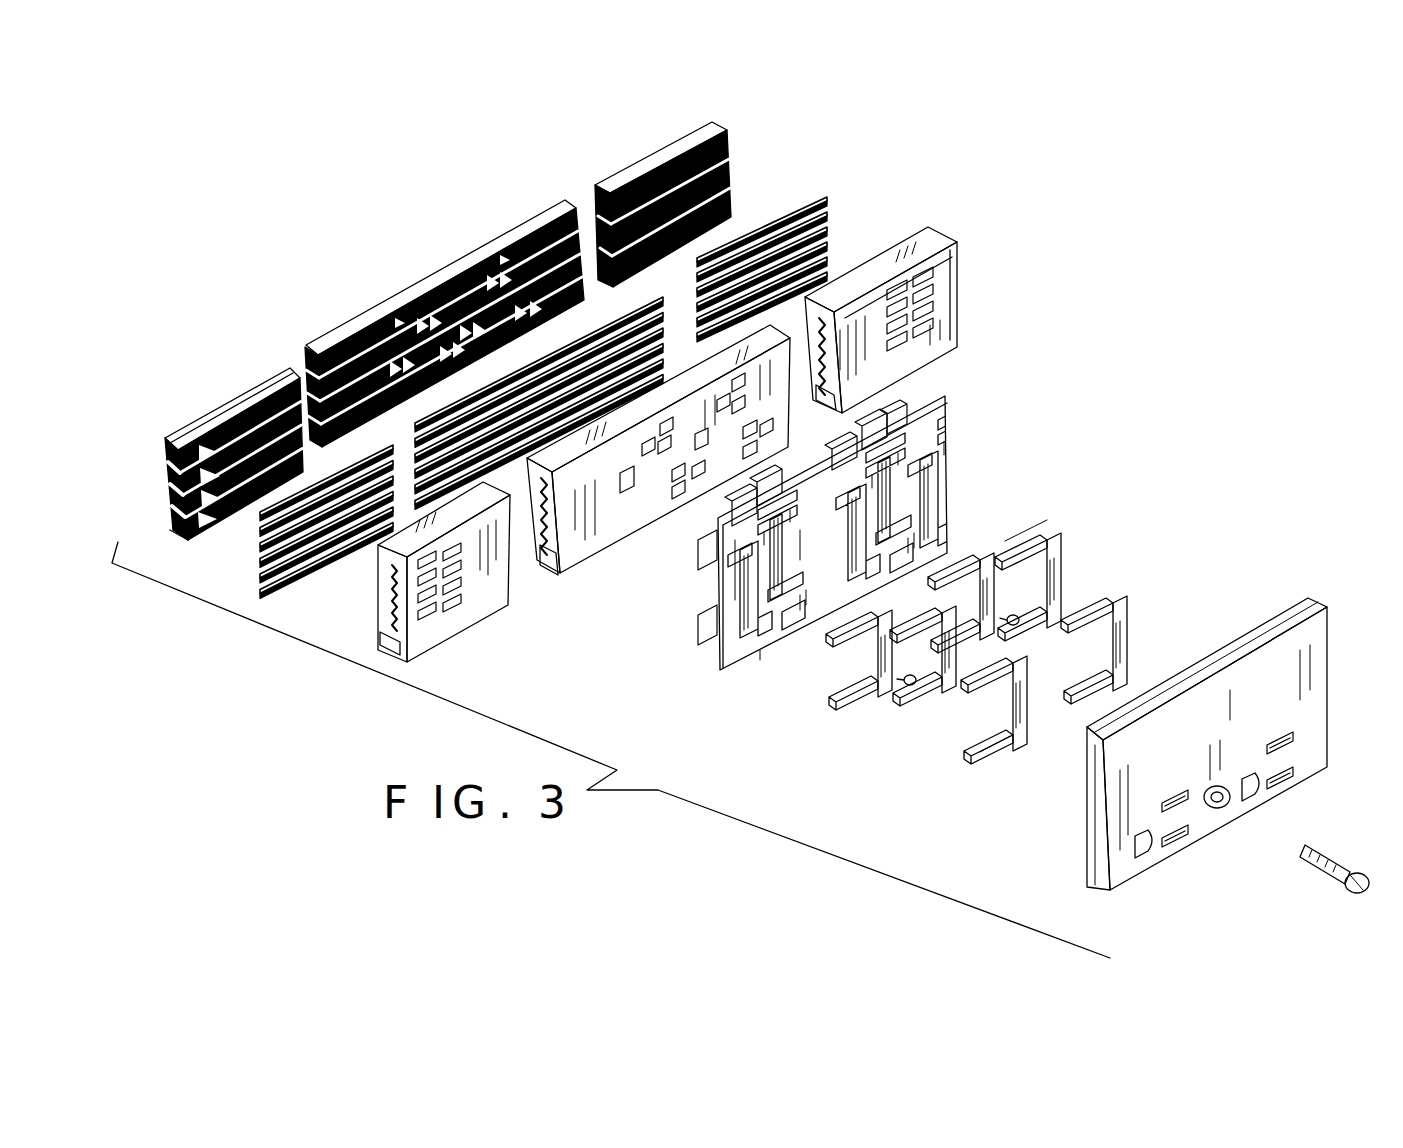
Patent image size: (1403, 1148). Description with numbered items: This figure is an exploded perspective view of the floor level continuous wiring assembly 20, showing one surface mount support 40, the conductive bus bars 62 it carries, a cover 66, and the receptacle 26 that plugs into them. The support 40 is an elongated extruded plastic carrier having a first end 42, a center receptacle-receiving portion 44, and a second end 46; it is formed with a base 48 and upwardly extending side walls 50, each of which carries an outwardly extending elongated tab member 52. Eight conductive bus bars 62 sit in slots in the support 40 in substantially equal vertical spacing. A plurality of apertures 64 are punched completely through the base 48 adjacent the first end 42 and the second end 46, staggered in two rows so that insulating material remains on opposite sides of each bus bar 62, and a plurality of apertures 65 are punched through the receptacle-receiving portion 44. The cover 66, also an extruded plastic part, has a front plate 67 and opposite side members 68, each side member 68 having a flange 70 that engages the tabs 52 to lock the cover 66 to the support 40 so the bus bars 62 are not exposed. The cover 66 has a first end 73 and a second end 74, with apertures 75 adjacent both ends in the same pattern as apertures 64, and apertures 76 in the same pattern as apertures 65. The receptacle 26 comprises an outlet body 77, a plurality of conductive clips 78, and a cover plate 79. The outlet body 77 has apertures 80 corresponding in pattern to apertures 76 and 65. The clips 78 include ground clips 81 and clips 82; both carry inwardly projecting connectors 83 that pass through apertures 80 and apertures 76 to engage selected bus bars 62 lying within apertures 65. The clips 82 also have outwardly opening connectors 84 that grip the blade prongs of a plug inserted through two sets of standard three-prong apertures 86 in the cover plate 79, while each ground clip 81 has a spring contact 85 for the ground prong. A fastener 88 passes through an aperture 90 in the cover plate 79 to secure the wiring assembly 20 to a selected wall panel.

The floor level wiring assembly 20 is at (1200, 237).
The receptacle 26 is at (1262, 458).
The support 40 is at (515, 169).
The first end 42 is at (158, 443).
The center receptacle-receiving portion 44 is at (448, 250).
The second end 46 is at (743, 154).
The base 48 is at (173, 484).
The side walls 50 is at (222, 394).
The tab member 52 is at (272, 385).
The conductive bus bar 62 is at (840, 209).
The apertures 64 is at (202, 443).
The apertures 65 is at (502, 262).
The cover 66 is at (988, 278).
The front plate 67 is at (950, 330).
The side members 68 is at (905, 235).
The flange 70 is at (811, 320).
The first end 73 is at (392, 656).
The second end 74 is at (960, 305).
The apertures 75 is at (938, 284).
The apertures 76 is at (739, 371).
The outlet body 77 is at (953, 430).
The conductive clips 78 is at (1116, 544).
The cover plate 79 is at (1308, 660).
The apertures 80 is at (905, 448).
The ground clips 81 is at (989, 580).
The clips 82 is at (1052, 576).
The inwardly projecting connectors 83 is at (1045, 528).
The outwardly opening connectors 84 is at (971, 685).
The spring contact 85 is at (1014, 614).
The apertures 86 is at (1141, 831).
The fastener 88 is at (1331, 857).
The aperture 90 is at (1219, 810).